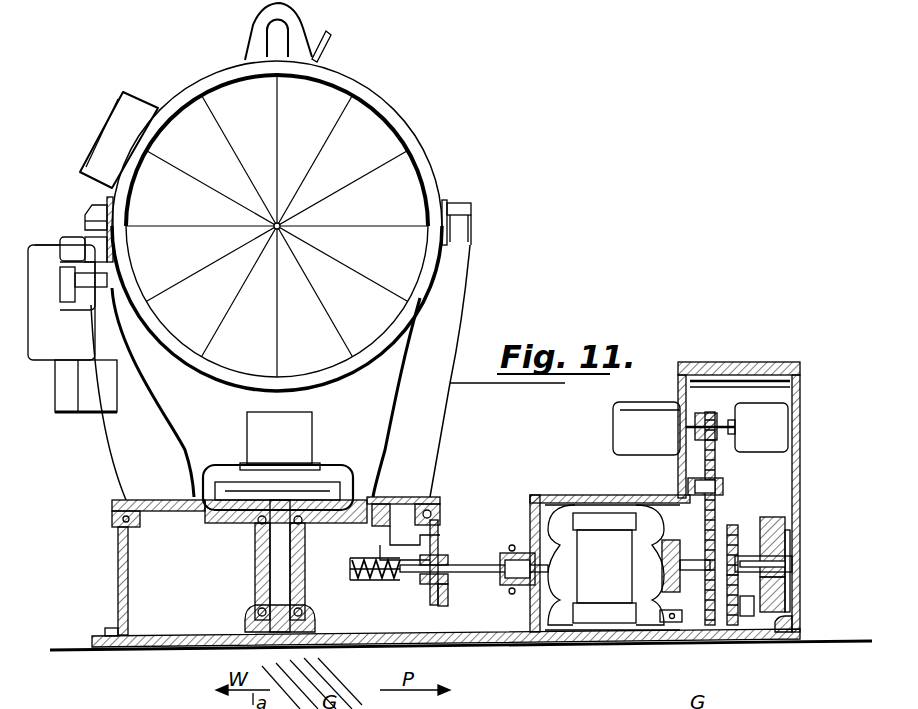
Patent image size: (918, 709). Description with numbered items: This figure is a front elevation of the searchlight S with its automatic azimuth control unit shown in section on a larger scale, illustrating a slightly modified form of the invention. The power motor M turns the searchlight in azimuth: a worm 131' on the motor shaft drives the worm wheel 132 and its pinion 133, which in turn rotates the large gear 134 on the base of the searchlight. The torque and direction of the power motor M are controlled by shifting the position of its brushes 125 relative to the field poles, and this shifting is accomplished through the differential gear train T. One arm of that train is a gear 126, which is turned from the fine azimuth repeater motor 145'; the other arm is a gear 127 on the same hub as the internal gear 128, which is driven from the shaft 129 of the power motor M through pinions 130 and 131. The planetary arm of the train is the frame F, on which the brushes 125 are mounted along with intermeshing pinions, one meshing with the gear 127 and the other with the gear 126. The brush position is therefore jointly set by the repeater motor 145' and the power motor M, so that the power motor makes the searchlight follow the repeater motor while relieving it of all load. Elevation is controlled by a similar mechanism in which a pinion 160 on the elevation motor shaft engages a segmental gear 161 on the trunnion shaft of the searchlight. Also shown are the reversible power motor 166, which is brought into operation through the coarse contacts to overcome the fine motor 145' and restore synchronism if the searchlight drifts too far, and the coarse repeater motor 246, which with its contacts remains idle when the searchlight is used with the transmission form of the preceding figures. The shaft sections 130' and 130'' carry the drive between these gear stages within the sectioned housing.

The searchlight S is at (275, 197).
The power motor M is at (605, 563).
The differential gear train T is at (732, 608).
The frame F is at (692, 628).
The brushes 125 is at (683, 508).
The gear 126 is at (728, 490).
The gear 127 is at (725, 515).
The internal gear 128 is at (783, 640).
The shaft 129 is at (789, 598).
The pinion 130 is at (796, 564).
The worm shaft lower section 130' is at (760, 640).
The vertical worm shaft 130'' is at (716, 545).
The pinion 131 is at (769, 497).
The worm 131' is at (414, 573).
The worm wheel 132 is at (351, 573).
The pinion 133 is at (384, 497).
The large gear 134 is at (186, 530).
The fine azimuth repeater motor 145' is at (775, 422).
The pinion 160 is at (110, 283).
The segmental gear 161 is at (108, 248).
The reversible power motor 166 is at (622, 412).
The coarse elevation repeater motor 246 is at (306, 434).